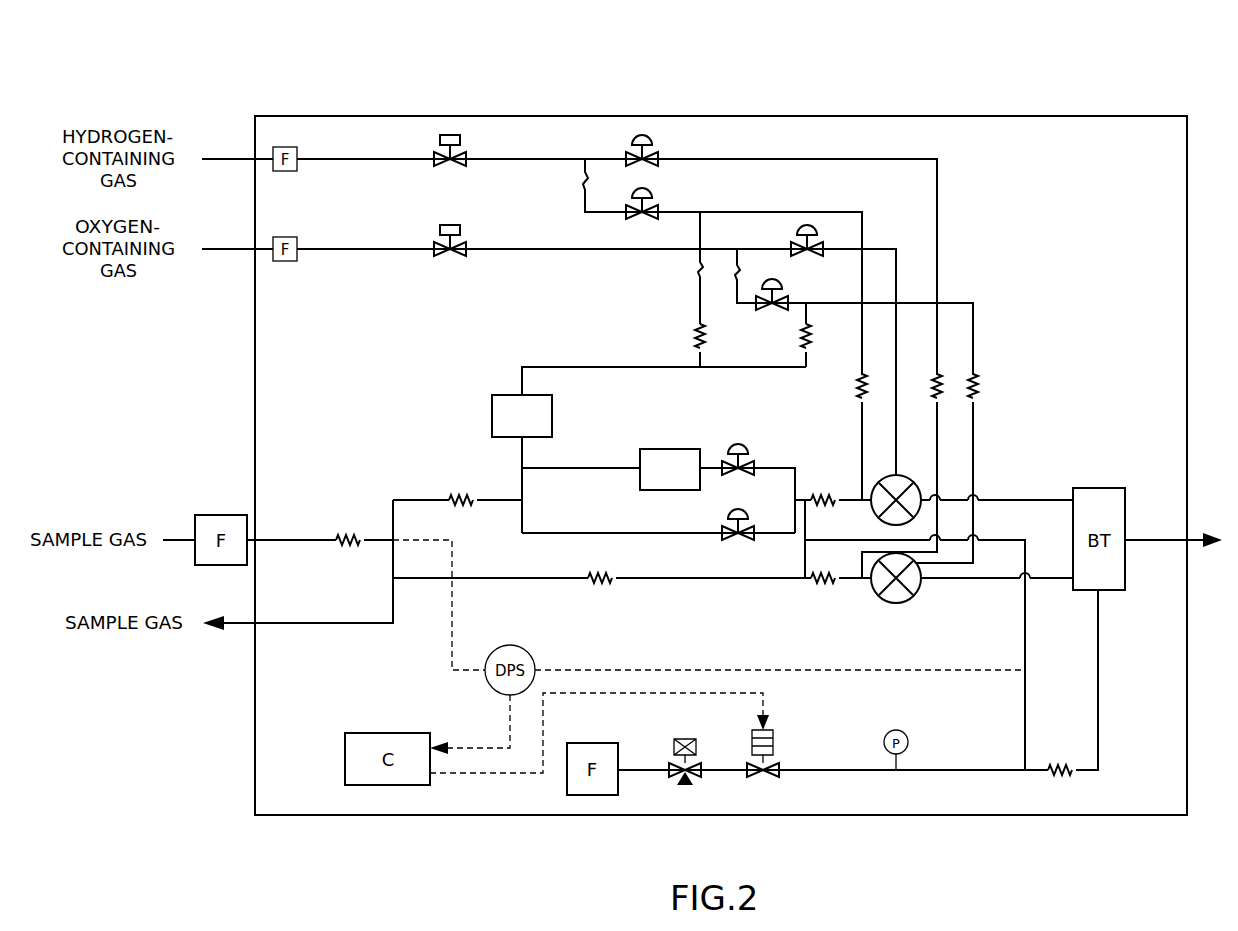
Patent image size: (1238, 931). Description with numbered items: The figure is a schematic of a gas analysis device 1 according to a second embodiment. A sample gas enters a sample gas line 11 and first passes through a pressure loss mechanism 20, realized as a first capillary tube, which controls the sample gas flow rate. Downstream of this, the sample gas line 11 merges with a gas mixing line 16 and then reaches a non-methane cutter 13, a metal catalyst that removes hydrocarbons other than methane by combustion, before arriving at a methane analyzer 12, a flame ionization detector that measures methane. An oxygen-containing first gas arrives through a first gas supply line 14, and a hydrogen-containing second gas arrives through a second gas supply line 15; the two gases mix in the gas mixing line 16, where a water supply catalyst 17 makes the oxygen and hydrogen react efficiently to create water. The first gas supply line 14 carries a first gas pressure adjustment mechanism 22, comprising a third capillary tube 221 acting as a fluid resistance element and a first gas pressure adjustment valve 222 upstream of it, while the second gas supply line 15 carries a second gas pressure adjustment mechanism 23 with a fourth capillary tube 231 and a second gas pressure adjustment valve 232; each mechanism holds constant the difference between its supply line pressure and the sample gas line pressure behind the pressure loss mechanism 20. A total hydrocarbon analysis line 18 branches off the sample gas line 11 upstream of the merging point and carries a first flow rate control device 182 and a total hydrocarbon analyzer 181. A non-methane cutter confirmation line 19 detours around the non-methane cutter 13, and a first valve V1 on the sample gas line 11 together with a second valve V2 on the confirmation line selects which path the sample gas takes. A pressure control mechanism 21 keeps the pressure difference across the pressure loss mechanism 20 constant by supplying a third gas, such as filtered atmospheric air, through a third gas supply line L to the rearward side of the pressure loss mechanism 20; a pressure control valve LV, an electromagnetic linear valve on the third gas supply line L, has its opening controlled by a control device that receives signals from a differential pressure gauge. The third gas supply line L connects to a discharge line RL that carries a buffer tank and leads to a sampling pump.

The gas analysis device 1 is at (739, 110).
The sample gas line 11 is at (627, 466).
The methane analyzer 12 is at (908, 480).
The non-methane cutter 13 is at (661, 448).
The first gas supply line 14 is at (809, 355).
The second gas supply line 15 is at (697, 311).
The gas mixing line 16 is at (540, 366).
The water supply catalyst 17 is at (505, 394).
The total hydrocarbon analysis line 18 is at (693, 582).
The non-methane cutter confirmation line 19 is at (669, 531).
The pressure loss mechanism 20 is at (465, 490).
The pressure control mechanism 21 is at (663, 777).
The first gas pressure adjustment mechanism 22 is at (819, 209).
The second gas pressure adjustment mechanism 23 is at (696, 209).
The total hydrocarbon analyzer 181 is at (894, 605).
The first flow rate control device 182 is at (612, 590).
The third capillary tube 221 is at (802, 339).
The first gas pressure adjustment valve 222 is at (774, 297).
The fourth capillary tube 231 is at (695, 346).
The second gas pressure adjustment valve 232 is at (661, 205).
The first valve V1 is at (738, 445).
The second valve V2 is at (738, 540).
The pressure control valve LV is at (777, 746).
The third gas supply line L is at (1023, 722).
The discharge line RL is at (1100, 652).